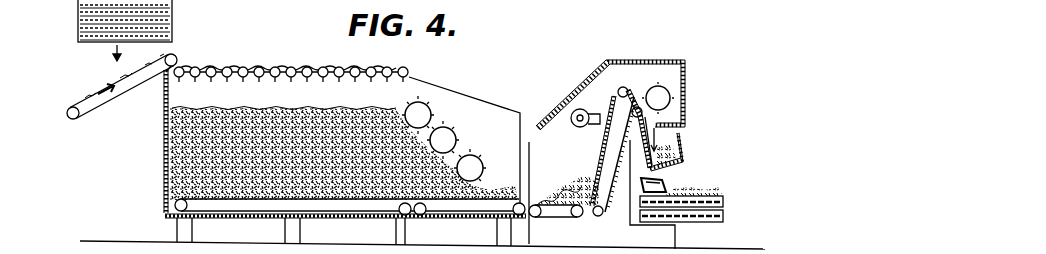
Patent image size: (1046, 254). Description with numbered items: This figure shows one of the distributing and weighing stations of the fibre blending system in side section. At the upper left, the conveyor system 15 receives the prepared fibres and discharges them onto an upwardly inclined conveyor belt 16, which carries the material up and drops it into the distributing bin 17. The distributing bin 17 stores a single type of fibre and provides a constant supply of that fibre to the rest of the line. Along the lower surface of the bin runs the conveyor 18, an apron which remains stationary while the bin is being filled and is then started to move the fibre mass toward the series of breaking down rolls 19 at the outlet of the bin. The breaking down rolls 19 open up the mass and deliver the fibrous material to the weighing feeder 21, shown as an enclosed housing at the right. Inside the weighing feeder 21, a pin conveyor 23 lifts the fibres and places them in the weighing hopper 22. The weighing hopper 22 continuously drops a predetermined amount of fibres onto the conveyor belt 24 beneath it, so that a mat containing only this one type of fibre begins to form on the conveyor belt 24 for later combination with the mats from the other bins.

The conveyor system 15 is at (78, 27).
The upwardly inclined conveyor belt 16 is at (113, 97).
The distributing bin 17 is at (165, 158).
The conveyor 18 is at (268, 215).
The breaking down rolls 19 is at (457, 134).
The weighing feeder 21 is at (635, 61).
The weighing hopper 22 is at (682, 146).
The pin conveyor 23 is at (603, 139).
The conveyor belt 24 is at (708, 196).